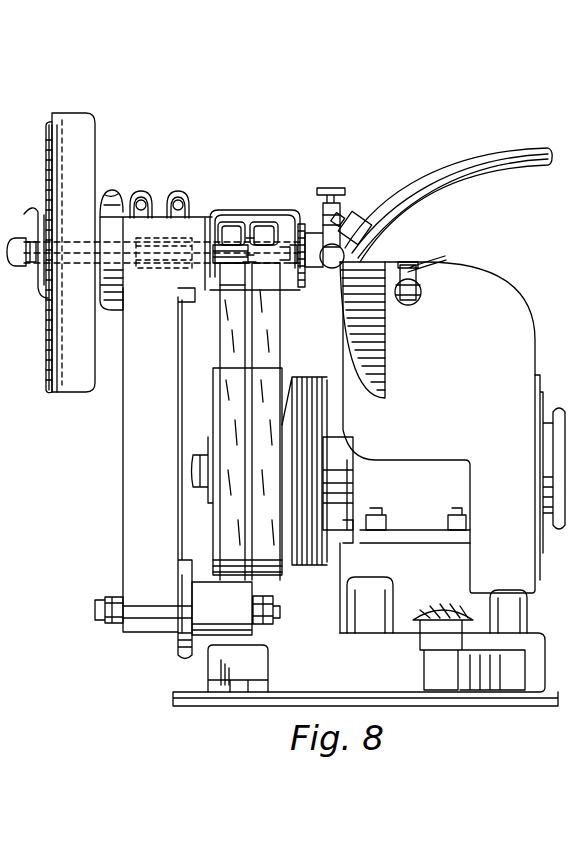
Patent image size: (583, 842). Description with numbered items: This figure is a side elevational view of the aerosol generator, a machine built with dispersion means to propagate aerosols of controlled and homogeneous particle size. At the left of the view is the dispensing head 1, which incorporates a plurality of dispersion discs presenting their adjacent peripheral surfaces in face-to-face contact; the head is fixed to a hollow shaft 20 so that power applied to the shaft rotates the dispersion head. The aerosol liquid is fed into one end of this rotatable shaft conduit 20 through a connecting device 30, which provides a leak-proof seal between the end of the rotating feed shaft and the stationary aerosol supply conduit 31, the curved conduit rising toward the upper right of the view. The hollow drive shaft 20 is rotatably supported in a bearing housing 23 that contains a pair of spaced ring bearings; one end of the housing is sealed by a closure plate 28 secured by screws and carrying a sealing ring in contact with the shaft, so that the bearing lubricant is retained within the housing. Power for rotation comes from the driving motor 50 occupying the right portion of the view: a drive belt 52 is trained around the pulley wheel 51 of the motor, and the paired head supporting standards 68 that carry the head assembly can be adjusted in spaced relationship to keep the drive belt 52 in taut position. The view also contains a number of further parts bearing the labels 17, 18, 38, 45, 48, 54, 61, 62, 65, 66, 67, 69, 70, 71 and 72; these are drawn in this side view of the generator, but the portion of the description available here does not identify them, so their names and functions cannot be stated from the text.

The dispensing head 1 is at (39, 152).
The hub 17 is at (35, 219).
The shaft end nut 18 is at (20, 269).
The hollow shaft 20 is at (233, 290).
The bearing housing 23 is at (194, 220).
The closure plate 28 is at (207, 228).
The connecting device 30 is at (288, 264).
The aerosol supply conduit 31 is at (474, 161).
The valve 38 is at (324, 225).
The flywheel 45 is at (95, 126).
The bracket hub 48 is at (113, 198).
The driving motor 50 is at (437, 434).
The pulley wheel 51 is at (215, 555).
The drive belt 52 is at (260, 352).
The bushings 54 is at (263, 222).
The oil cup 61 is at (386, 253).
The collar 62 is at (305, 275).
The belt pulley 65 is at (311, 570).
The base 66 is at (545, 658).
The cap 67 is at (421, 690).
The head supporting standards 68 is at (121, 444).
The bolt 69 is at (96, 608).
The rod 70 is at (262, 603).
The bolt 71 is at (152, 216).
The bracket arm 72 is at (271, 211).